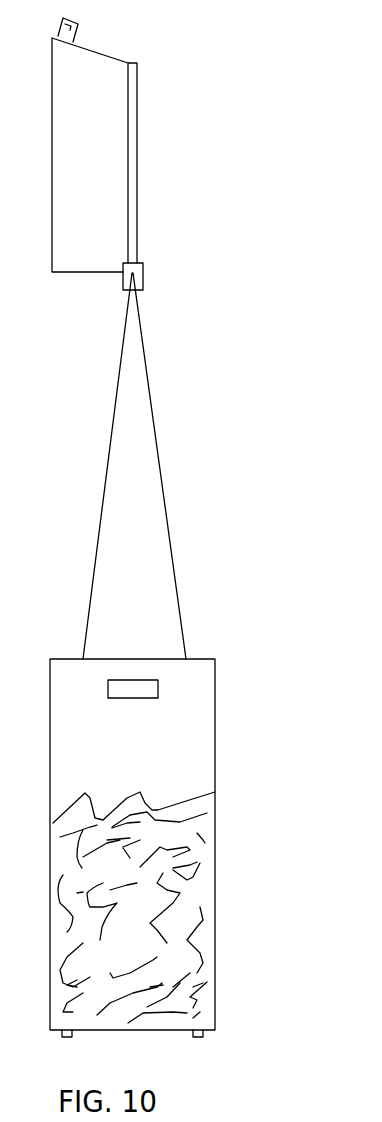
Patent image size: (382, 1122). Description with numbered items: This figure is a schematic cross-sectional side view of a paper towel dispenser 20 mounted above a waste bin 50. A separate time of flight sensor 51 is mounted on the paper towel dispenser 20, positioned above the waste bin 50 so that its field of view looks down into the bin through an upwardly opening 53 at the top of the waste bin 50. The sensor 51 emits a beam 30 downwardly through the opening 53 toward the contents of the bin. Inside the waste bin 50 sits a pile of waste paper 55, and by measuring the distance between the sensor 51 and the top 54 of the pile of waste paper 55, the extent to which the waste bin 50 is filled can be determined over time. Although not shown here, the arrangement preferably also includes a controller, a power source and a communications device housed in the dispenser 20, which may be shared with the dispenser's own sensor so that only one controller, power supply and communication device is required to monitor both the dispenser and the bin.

The paper towel dispenser 20 is at (102, 188).
The time of flight sensor 51 is at (143, 277).
The beam 30 is at (157, 465).
The waste bin 50 is at (222, 732).
The upwardly opening 53 is at (197, 658).
The top of pile of waste paper 54 is at (123, 795).
The pile of waste paper 55 is at (197, 945).